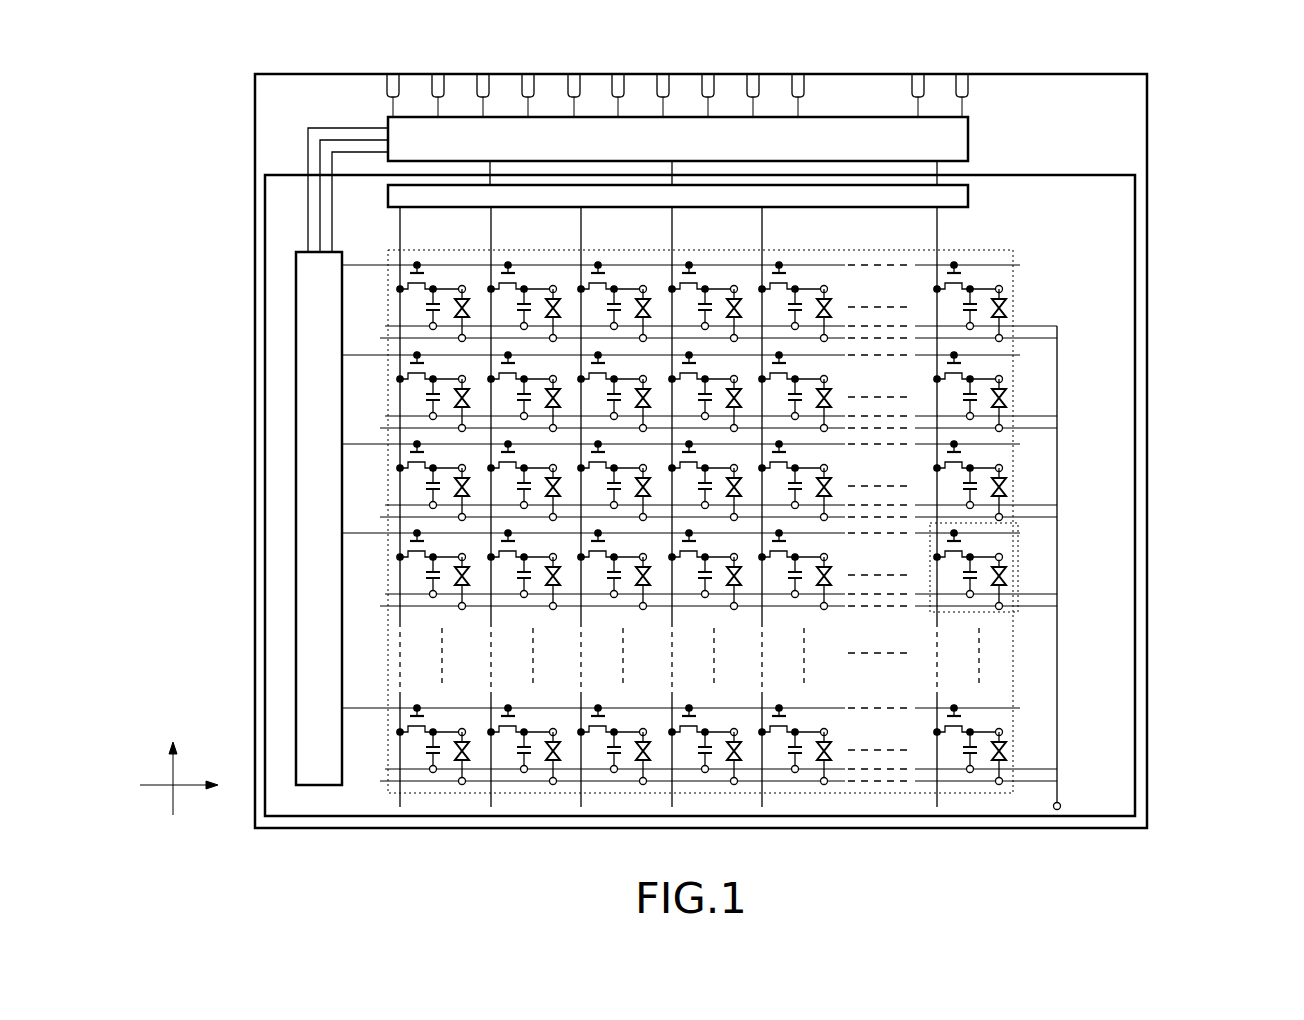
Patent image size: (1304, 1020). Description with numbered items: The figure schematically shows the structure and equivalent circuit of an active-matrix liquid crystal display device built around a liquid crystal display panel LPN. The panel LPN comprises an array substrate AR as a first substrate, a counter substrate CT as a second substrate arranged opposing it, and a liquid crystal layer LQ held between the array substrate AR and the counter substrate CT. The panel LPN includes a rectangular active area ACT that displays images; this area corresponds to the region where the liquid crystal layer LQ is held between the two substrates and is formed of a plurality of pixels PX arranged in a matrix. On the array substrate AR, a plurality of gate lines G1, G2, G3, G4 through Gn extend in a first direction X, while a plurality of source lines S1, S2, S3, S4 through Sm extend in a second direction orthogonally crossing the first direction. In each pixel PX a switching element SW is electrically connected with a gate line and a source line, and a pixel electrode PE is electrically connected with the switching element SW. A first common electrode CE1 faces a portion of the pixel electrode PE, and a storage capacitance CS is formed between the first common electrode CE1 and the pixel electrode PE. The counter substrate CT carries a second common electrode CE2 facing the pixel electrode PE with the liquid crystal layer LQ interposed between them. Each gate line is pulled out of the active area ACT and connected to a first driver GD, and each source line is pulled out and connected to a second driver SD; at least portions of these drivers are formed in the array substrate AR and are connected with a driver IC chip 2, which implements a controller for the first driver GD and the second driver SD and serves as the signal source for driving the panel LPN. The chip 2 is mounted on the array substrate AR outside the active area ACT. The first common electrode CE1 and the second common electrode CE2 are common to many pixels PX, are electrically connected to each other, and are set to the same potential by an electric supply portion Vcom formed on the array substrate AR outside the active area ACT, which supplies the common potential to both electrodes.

The liquid crystal display panel LPN is at (1198, 72).
The array substrate AR is at (1135, 130).
The counter substrate CT is at (1135, 228).
The driver IC chip 2 is at (968, 118).
The second driver SD is at (970, 192).
The first driver GD is at (296, 640).
The active area ACT is at (1013, 370).
The gate line G1 is at (358, 263).
The gate line G2 is at (358, 353).
The gate line G3 is at (358, 442).
The gate line G4 is at (358, 531).
The gate line Gn is at (358, 706).
The source line S1 is at (403, 228).
The source line S2 is at (494, 228).
The source line S3 is at (584, 228).
The source line S4 is at (675, 228).
The source line Sm is at (940, 228).
The pixel PX is at (1012, 613).
The switching element SW is at (922, 549).
The storage capacitance CS is at (942, 580).
The pixel electrode PE is at (1002, 555).
The liquid crystal layer LQ is at (1006, 576).
The first common electrode CE1 is at (972, 598).
The second common electrode CE2 is at (1001, 603).
The electric supply portion Vcom is at (1055, 810).